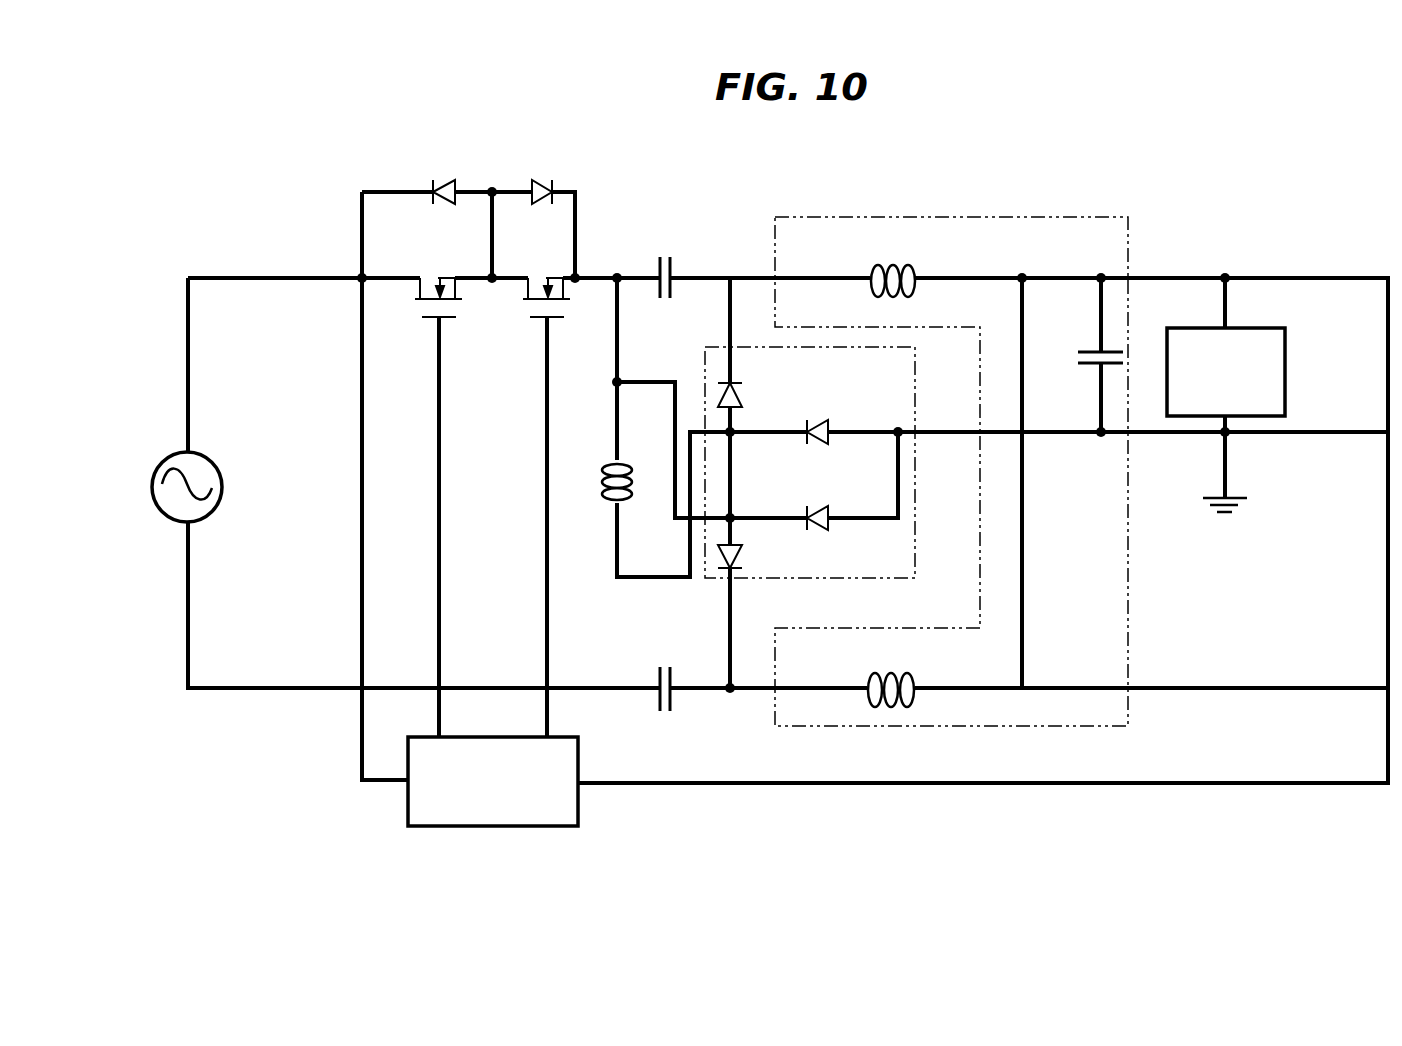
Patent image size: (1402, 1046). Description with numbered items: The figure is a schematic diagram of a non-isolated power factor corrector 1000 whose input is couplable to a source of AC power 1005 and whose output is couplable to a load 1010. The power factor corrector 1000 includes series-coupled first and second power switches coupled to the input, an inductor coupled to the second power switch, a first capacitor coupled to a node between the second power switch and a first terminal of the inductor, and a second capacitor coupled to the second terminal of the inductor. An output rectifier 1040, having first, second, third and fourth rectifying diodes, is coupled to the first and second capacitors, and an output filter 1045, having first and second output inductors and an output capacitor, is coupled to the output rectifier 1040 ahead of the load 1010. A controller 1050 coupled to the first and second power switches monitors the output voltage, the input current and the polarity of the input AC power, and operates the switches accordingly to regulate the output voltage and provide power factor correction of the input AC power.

The non-isolated power factor corrector 1000 is at (472, 141).
The source of AC power 1005 is at (157, 472).
The load 1010 is at (1285, 357).
The output rectifier 1040 is at (810, 462).
The output filter 1045 is at (1128, 663).
The controller 1050 is at (553, 828).